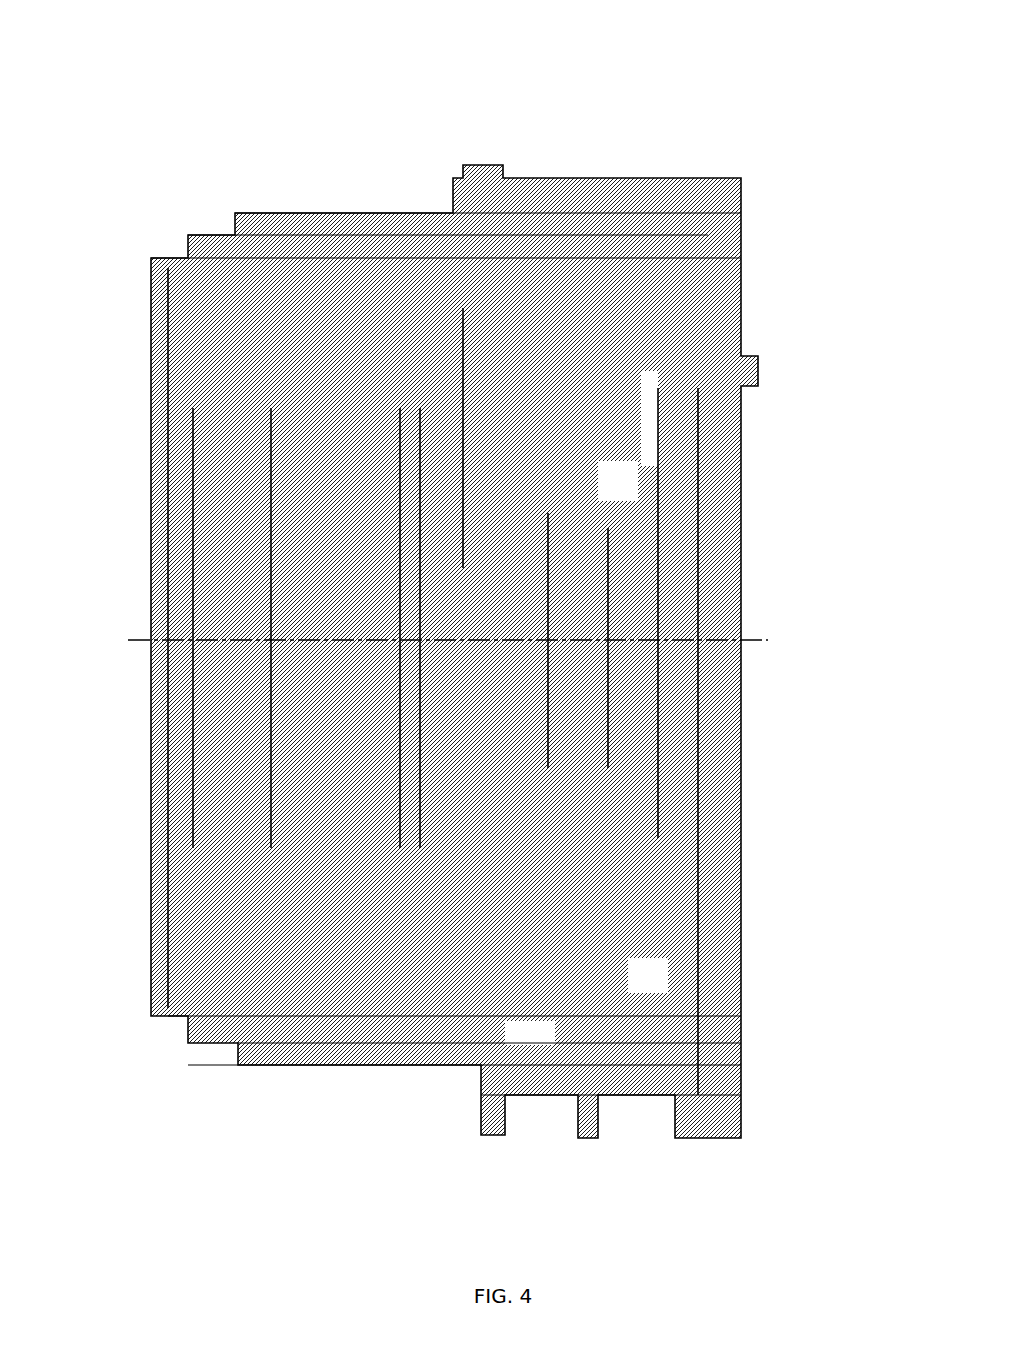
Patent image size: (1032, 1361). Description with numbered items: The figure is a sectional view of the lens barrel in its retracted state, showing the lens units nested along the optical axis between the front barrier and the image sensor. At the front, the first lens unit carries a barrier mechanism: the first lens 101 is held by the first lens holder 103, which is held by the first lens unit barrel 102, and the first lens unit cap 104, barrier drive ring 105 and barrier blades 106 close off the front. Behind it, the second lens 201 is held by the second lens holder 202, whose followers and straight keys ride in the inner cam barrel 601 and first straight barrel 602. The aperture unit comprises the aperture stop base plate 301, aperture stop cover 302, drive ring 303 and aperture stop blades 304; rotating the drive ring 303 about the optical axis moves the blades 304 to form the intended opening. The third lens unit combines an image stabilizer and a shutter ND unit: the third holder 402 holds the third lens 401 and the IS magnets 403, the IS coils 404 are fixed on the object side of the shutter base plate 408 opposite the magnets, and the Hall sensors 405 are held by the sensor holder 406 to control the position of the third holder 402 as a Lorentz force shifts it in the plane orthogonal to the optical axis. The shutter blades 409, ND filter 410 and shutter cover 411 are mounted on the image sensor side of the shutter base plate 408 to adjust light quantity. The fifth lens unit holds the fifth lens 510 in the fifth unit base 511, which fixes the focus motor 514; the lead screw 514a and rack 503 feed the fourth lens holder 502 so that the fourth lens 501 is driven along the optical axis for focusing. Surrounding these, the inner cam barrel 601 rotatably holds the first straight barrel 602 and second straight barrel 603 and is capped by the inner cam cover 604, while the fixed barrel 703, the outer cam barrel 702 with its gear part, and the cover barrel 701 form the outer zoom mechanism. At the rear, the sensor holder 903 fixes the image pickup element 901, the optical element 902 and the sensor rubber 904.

The first lens 101 is at (190, 587).
The first lens unit barrel 102 is at (223, 360).
The first lens holder 103 is at (230, 403).
The first lens unit cap 104 is at (147, 360).
The barrier drive ring 105 is at (190, 423).
The barrier blades 106 is at (160, 520).
The second lens 201 is at (325, 255).
The second lens holder 202 is at (232, 203).
The aperture stop base plate 301 is at (405, 550).
The aperture stop cover 302 is at (312, 330).
The drive ring 303 is at (385, 540).
The aperture stop blades 304 is at (335, 530).
The third lens 401 is at (470, 440).
The third holder 402 is at (482, 460).
The IS magnets 403 is at (505, 420).
The IS coils 404 is at (530, 430).
The Hall sensors 405 is at (458, 557).
The sensor holder 406 is at (447, 430).
The shutter base plate 408 is at (548, 470).
The shutter blades 409 is at (560, 470).
The ND filter 410 is at (600, 540).
The shutter cover 411 is at (640, 560).
The fourth lens 501 is at (577, 715).
The fourth lens holder 502 is at (593, 820).
The rack 503 is at (605, 870).
The fifth lens 510 is at (643, 668).
The fifth unit base 511 is at (647, 810).
The focus motor 514 is at (667, 897).
The lead screw 514a is at (550, 890).
The inner cam barrel 601 is at (493, 953).
The first straight barrel 602 is at (243, 953).
The second straight barrel 603 is at (673, 990).
The inner cam cover 604 is at (403, 1000).
The cover barrel 701 is at (673, 1110).
The outer cam barrel 702 is at (330, 1047).
The fixed barrel 703 is at (273, 1023).
The image pickup element 901 is at (707, 600).
The optical element 902 is at (667, 557).
The sensor holder 903 is at (723, 362).
The sensor rubber 904 is at (683, 487).